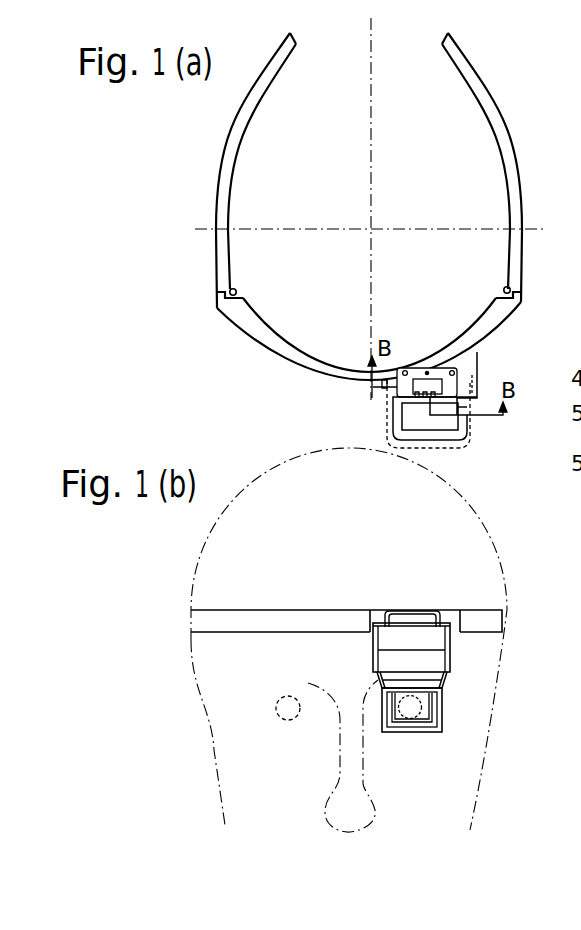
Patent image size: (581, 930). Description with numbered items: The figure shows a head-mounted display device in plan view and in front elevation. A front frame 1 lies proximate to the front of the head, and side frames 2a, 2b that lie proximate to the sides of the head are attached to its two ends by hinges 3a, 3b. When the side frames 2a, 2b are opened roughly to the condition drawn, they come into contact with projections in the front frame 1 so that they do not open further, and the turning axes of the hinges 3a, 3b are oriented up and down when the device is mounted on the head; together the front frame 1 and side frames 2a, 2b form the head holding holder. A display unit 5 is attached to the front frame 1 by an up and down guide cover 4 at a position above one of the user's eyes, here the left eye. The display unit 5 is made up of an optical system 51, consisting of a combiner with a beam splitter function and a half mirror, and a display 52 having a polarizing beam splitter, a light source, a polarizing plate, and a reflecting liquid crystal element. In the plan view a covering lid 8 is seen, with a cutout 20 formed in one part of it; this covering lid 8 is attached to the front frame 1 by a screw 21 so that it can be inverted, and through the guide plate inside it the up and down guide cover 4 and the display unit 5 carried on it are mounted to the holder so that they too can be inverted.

In FIG. 1A, the front frame 1 is at (510, 322).
In FIG. 1B, the front frame 1 is at (478, 617).
In FIG. 1A, the side frame 2a is at (216, 182).
In FIG. 1A, the side frame 2b is at (523, 178).
In FIG. 1A, the hinge 3a is at (237, 289).
In FIG. 1A, the hinge 3b is at (504, 288).
In FIG. 1A, the up and down guide cover 4 is at (474, 405).
In FIG. 1B, the up and down guide cover 4 is at (452, 645).
In FIG. 1B, the display unit 5 is at (458, 706).
In FIG. 1A, the covering lid 8 is at (458, 386).
In FIG. 1A, the cutout 20 is at (427, 371).
In FIG. 1A, the screw 21 is at (452, 371).
In FIG. 1B, the optical system 51 is at (442, 717).
In FIG. 1B, the display 52 is at (432, 683).